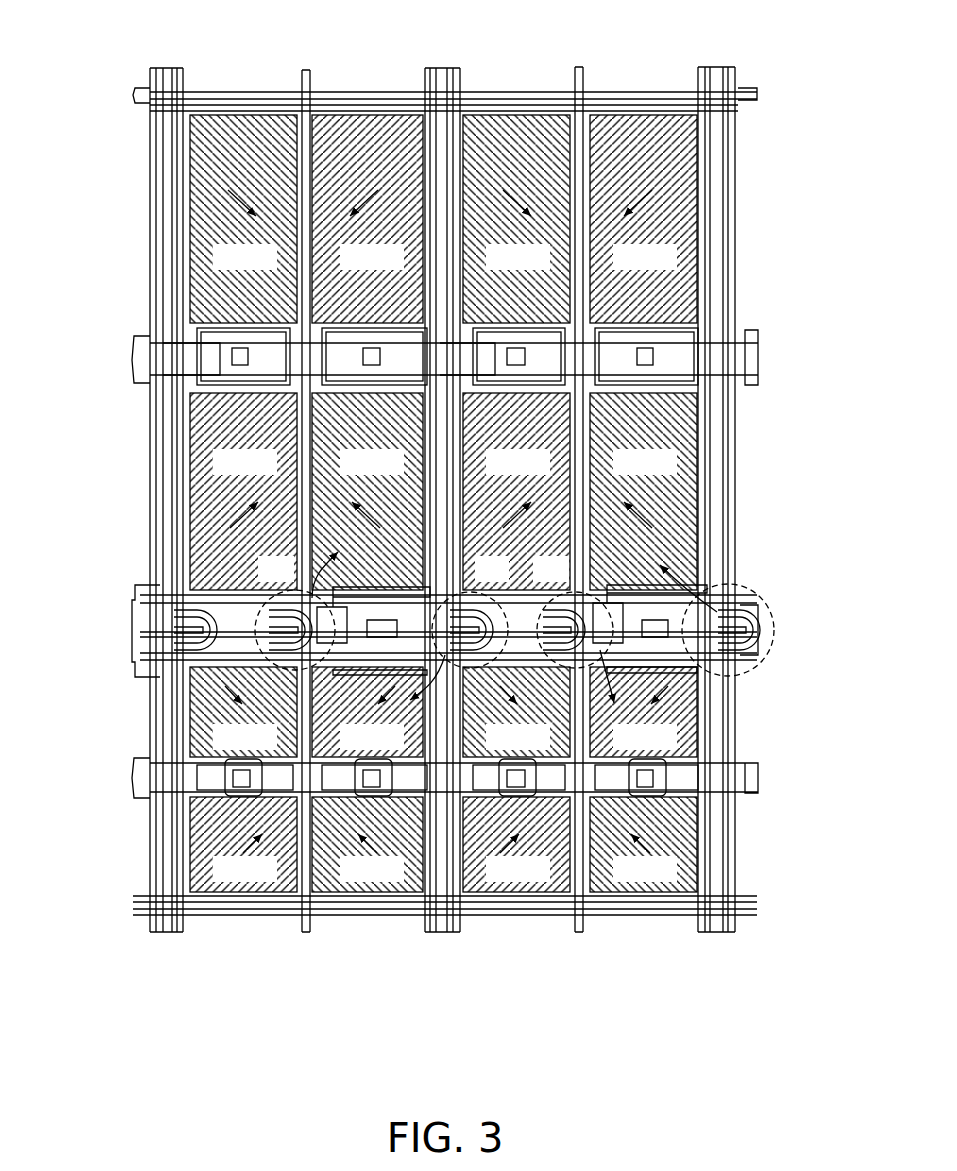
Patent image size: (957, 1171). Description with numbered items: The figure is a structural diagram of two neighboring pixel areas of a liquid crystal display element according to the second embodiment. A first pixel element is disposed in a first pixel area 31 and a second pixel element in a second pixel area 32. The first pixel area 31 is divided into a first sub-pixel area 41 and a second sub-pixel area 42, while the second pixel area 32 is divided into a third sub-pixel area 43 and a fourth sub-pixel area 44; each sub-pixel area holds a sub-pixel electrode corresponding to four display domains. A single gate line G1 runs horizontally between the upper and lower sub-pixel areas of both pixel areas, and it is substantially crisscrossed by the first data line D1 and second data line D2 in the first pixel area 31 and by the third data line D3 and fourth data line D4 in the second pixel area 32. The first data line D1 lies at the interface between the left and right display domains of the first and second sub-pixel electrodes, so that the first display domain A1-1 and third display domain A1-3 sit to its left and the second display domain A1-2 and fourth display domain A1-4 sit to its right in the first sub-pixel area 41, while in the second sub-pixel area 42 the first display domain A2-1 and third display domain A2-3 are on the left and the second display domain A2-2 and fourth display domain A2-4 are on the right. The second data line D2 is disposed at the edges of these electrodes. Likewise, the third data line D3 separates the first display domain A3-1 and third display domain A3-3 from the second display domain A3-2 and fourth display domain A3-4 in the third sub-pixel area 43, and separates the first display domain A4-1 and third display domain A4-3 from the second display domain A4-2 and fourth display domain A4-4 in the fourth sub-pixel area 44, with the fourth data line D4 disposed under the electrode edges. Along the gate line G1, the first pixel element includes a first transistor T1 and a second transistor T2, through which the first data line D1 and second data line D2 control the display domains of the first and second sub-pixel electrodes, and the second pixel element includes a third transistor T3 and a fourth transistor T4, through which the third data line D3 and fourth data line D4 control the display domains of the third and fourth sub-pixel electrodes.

The first pixel area 31 is at (183, 955).
The second pixel area 32 is at (455, 955).
The first sub-pixel area 41 is at (122, 80).
The second sub-pixel area 42 is at (108, 667).
The third sub-pixel area 43 is at (763, 77).
The fourth sub-pixel area 44 is at (780, 665).
The gate line G1 is at (132, 630).
The first data line D1 is at (306, 70).
The second data line D2 is at (442, 68).
The third data line D3 is at (580, 67).
The fourth data line D4 is at (718, 67).
The first transistor T1 is at (305, 600).
The second transistor T2 is at (470, 600).
The third transistor T3 is at (570, 600).
The fourth transistor T4 is at (749, 630).
The first display domain A1-1 is at (243, 219).
The second display domain A1-2 is at (367, 219).
The third display domain A1-3 is at (243, 491).
The fourth display domain A1-4 is at (367, 491).
The first display domain A2-1 is at (243, 712).
The second display domain A2-2 is at (367, 712).
The third display domain A2-3 is at (243, 844).
The fourth display domain A2-4 is at (367, 844).
The first display domain A3-1 is at (516, 219).
The second display domain A3-2 is at (643, 219).
The third display domain A3-3 is at (516, 491).
The fourth display domain A3-4 is at (643, 491).
The first display domain A4-1 is at (516, 712).
The second display domain A4-2 is at (643, 712).
The third display domain A4-3 is at (516, 844).
The fourth display domain A4-4 is at (643, 844).